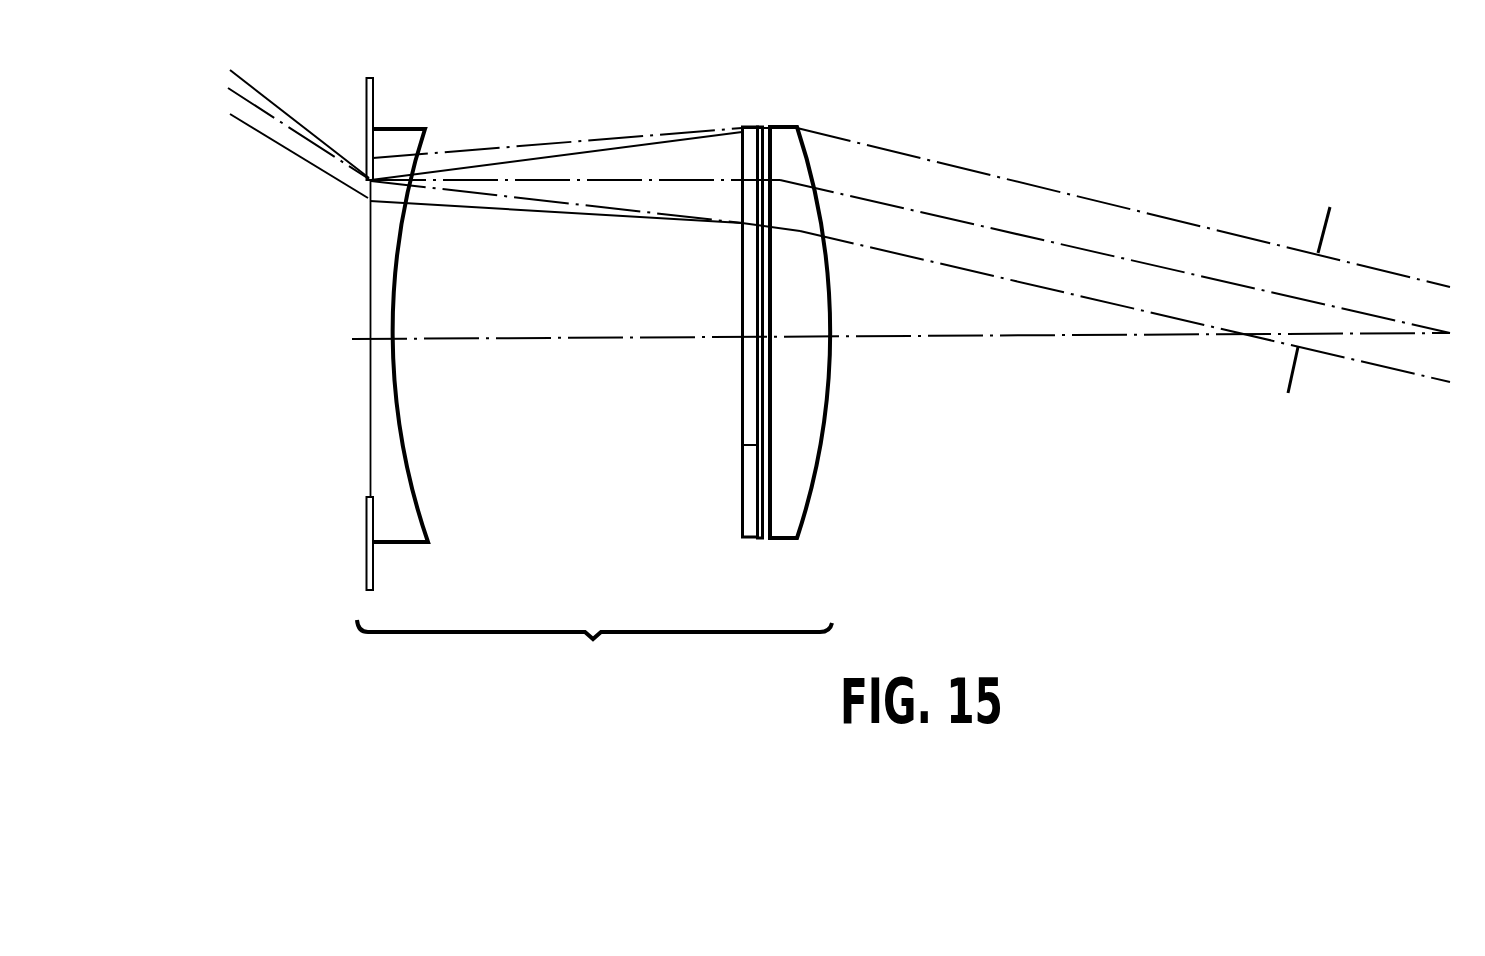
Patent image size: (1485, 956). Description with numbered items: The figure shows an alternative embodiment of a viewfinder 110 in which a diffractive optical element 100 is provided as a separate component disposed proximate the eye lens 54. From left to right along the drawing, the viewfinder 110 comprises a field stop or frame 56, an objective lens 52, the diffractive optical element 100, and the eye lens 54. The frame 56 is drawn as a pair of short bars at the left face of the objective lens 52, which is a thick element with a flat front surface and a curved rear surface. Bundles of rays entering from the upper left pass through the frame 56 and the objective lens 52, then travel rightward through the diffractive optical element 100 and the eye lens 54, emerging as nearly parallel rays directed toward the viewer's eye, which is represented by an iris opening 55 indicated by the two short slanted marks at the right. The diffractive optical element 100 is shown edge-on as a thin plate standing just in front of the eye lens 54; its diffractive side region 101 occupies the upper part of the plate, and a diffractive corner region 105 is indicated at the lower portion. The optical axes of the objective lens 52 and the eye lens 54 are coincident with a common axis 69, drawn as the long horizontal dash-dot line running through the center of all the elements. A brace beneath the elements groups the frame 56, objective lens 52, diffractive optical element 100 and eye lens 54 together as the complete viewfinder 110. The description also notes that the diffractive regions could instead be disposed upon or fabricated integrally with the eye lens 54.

The objective lens 52 is at (428, 540).
The eye lens 54 is at (800, 537).
The iris opening 55 is at (1332, 228).
The field stop or frame 56 is at (362, 578).
The common axis 69 is at (953, 337).
The diffractive optical element 100 is at (755, 541).
The diffractive side region 101 is at (747, 398).
The diffractive corner region 105 is at (747, 502).
The viewfinder 110 is at (594, 648).